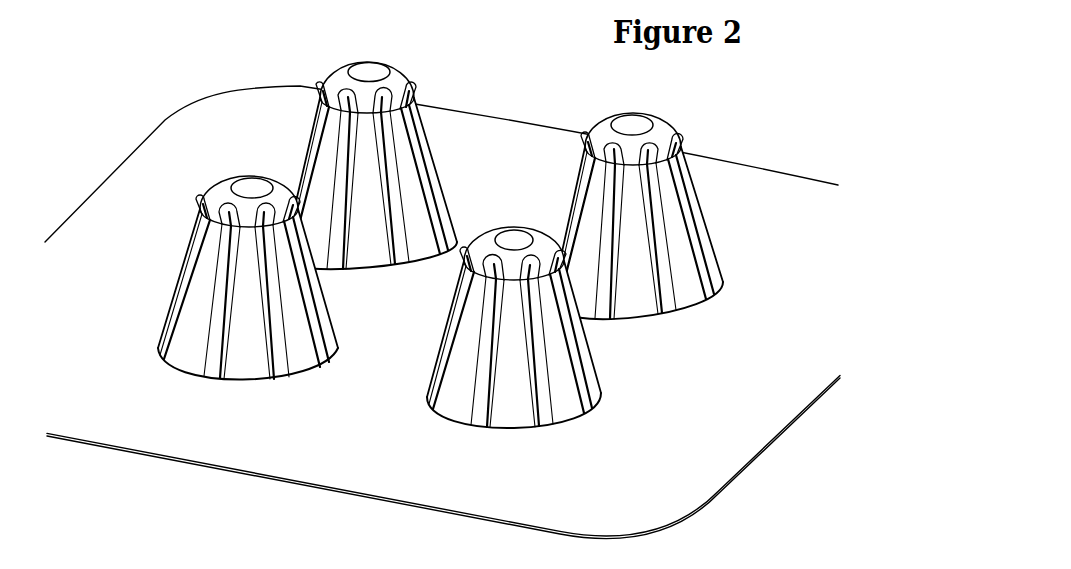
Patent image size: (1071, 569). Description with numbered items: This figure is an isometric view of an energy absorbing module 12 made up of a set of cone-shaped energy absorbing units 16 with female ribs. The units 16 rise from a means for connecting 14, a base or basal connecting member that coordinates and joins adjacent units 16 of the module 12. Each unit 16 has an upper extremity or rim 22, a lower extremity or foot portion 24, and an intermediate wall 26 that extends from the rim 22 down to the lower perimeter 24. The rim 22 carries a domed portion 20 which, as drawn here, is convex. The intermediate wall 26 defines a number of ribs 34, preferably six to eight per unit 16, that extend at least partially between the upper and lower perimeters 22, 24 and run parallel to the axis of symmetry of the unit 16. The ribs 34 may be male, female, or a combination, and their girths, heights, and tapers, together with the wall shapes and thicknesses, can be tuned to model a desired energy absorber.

The energy absorbing module 12 is at (508, 163).
The means for connecting 14 is at (743, 435).
The energy absorbing unit 16 is at (367, 252).
The domed portion 20 is at (363, 75).
The upper perimeter 22 is at (397, 77).
The lower perimeter 24 is at (427, 243).
The intermediate wall 26 is at (563, 370).
The ribs 34 is at (422, 137).